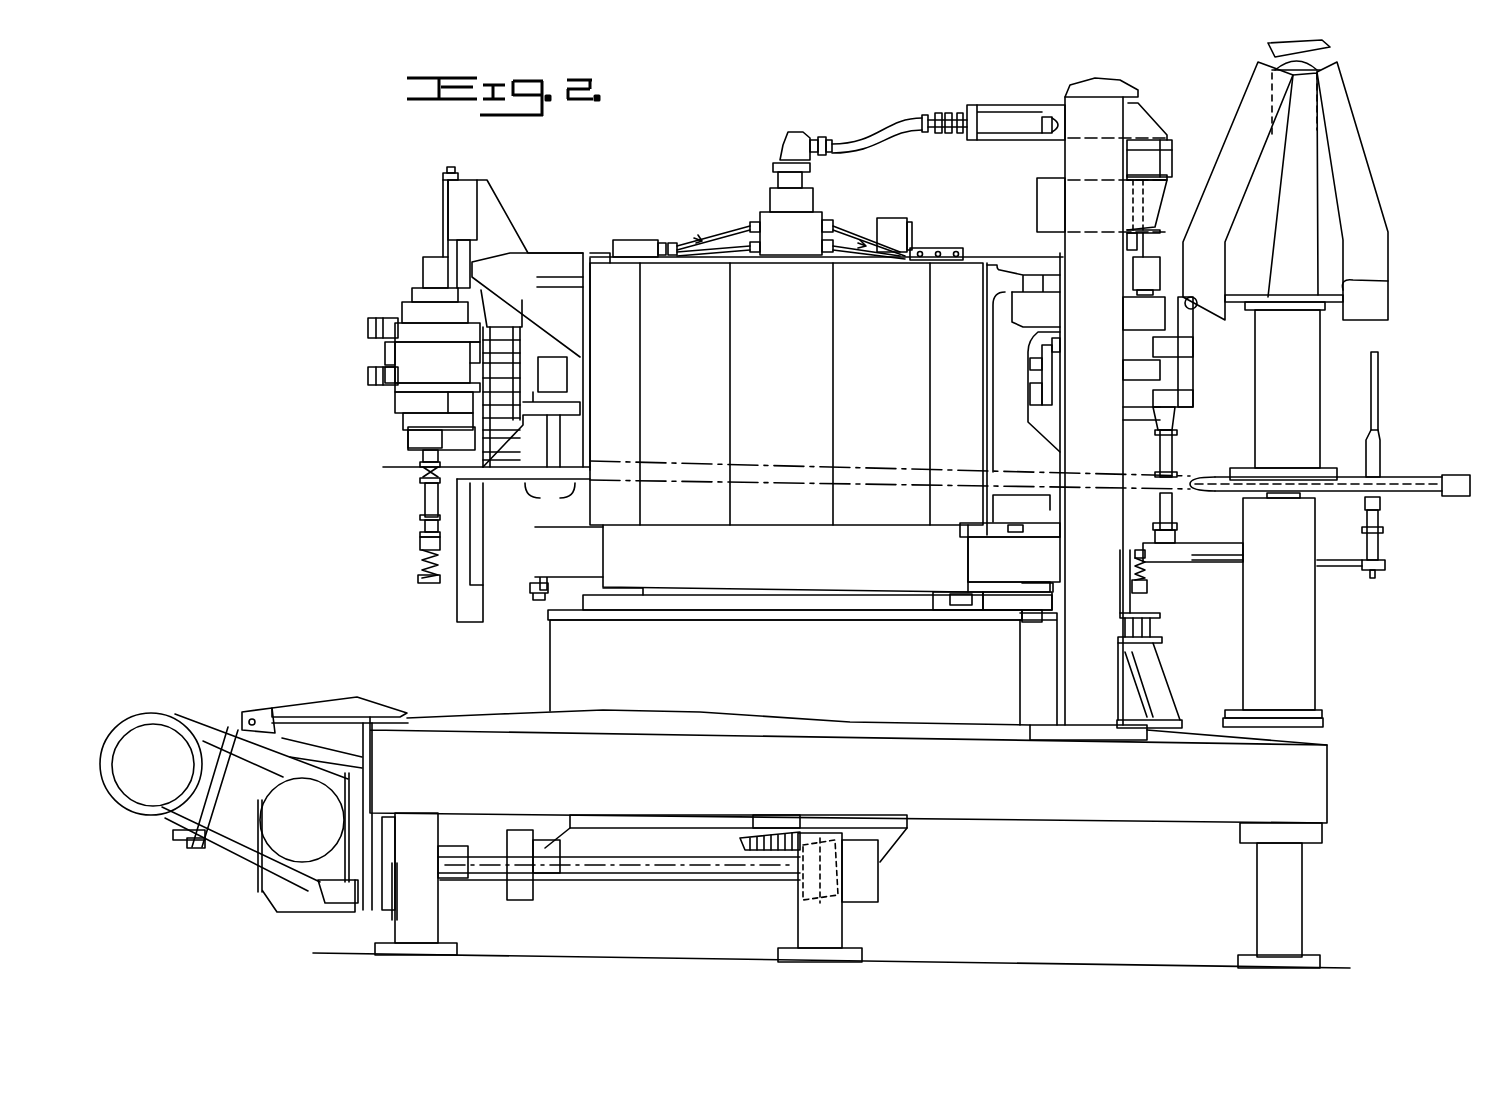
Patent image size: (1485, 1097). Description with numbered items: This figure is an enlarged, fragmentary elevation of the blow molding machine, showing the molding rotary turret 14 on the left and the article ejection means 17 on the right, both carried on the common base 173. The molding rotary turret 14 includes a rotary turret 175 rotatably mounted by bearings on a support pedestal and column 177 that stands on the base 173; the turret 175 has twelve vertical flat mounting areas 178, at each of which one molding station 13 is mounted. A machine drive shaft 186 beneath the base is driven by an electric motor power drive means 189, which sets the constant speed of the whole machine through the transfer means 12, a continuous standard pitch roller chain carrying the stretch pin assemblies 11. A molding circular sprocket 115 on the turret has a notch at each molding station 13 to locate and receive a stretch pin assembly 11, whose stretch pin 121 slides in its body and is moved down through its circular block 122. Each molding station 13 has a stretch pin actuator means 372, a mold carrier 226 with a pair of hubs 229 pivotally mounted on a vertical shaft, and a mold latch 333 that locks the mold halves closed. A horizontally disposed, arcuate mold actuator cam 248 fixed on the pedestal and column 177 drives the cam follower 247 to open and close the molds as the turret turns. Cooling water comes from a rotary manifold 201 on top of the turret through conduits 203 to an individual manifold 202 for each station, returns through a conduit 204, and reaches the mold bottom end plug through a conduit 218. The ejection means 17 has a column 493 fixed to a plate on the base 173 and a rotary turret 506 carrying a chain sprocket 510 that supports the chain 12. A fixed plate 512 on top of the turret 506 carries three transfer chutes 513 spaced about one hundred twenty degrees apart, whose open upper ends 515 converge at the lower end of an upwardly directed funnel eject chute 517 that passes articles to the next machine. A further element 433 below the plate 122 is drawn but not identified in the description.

The stretch pin assembly 11 is at (425, 497).
The transfer means 12 is at (1405, 478).
The molding station 13 is at (368, 328).
The molding rotary turret 14 is at (620, 248).
The article ejection means 17 is at (1310, 191).
The molding circular sprocket 115 is at (432, 470).
The stretch pin 121 is at (1380, 402).
The circular block 122 is at (1175, 548).
The base 173 is at (1308, 779).
The rotary turret 175 is at (898, 522).
The support pedestal and column 177 is at (548, 678).
The vertical flat mounting area 178 is at (707, 517).
The machine drive shaft 186 is at (637, 868).
The power drive means 189 is at (205, 719).
The rotary manifold 201 is at (823, 212).
The individual manifold 202 is at (639, 241).
The conduit 203 is at (716, 258).
The conduit 204 is at (714, 236).
The conduit 218 is at (921, 249).
The mold carrier 226 is at (410, 300).
The hub 229 is at (510, 364).
The cam follower 247 is at (539, 583).
The mold actuator cam 248 is at (1012, 598).
The mold latch 333 is at (368, 378).
The stretch pin actuator means 372 is at (415, 562).
The spring 433 is at (1147, 590).
The column 493 is at (1302, 670).
The rotary turret 506 is at (1323, 377).
The chain sprocket 510 is at (1417, 481).
The fixed plate 512 is at (1383, 280).
The transfer chute 513 is at (1300, 192).
The upper end 515 is at (1333, 62).
The funnel eject chute 517 is at (1325, 43).